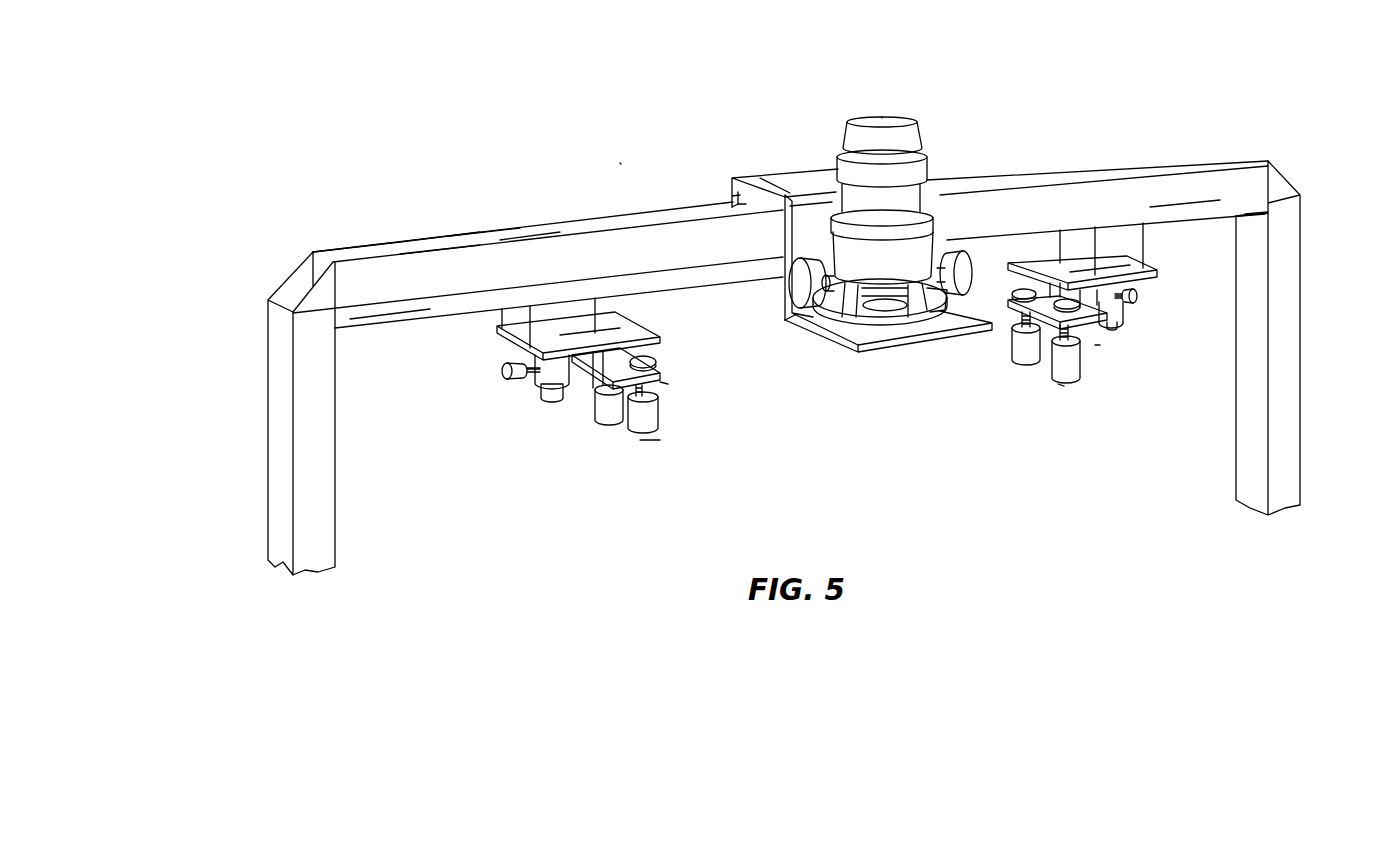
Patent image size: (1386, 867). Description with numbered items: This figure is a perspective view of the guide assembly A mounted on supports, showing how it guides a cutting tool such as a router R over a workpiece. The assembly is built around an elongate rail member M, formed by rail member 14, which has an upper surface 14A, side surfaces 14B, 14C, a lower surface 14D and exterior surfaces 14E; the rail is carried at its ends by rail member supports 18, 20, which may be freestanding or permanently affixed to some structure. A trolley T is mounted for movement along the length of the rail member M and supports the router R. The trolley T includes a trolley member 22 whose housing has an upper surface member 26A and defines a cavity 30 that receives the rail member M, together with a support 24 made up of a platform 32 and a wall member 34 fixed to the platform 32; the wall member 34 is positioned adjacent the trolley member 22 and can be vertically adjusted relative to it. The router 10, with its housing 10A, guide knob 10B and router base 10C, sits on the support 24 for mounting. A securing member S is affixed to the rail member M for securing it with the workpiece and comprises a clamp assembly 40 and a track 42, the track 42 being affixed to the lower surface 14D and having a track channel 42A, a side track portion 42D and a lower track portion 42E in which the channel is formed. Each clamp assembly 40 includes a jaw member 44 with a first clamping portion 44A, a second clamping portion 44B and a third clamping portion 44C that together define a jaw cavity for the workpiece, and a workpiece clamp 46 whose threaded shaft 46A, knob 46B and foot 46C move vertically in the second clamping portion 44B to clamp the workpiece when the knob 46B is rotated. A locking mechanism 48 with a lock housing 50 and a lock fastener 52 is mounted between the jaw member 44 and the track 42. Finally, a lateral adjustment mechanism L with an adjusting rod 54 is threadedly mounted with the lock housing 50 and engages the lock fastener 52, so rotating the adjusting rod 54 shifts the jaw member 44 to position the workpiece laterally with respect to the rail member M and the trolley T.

The rail member M is at (349, 246).
The rail member 14 is at (396, 247).
The upper surface 14A is at (426, 252).
The side surface 14B is at (447, 262).
The side surface 14C is at (484, 240).
The lower surface 14D is at (388, 308).
The exterior surfaces 14E is at (530, 232).
The rail member support 18 is at (280, 487).
The rail member support 20 is at (1302, 408).
The guide assembly A is at (620, 163).
The trolley T is at (727, 180).
The trolley member 22 is at (760, 180).
The upper surface member 26A is at (787, 183).
The cavity 30 is at (733, 198).
The wall member 34 is at (800, 232).
The platform 32 is at (832, 350).
The support 24 is at (883, 355).
The router 10 is at (859, 248).
The housing 10A is at (912, 137).
The guide knob 10B is at (800, 283).
The router base 10C is at (933, 325).
The router R is at (903, 118).
The track 42 is at (1218, 206).
The track channel 42A is at (1183, 205).
The side track portion 42D is at (1248, 212).
The lower track portion 42E is at (1232, 225).
The jaw member 44 is at (665, 336).
The first clamping portion 44A is at (627, 326).
The second clamping portion 44B is at (657, 377).
The third clamping portion 44C is at (592, 383).
The workpiece clamp 46 is at (638, 428).
The threaded shaft 46A is at (647, 391).
The knob 46B is at (650, 413).
The foot 46C is at (657, 360).
The locking mechanism 48 is at (540, 383).
The lock housing 50 is at (568, 385).
The lock fastener 52 is at (545, 400).
The adjusting rod 54 is at (502, 362).
The lateral adjustment mechanism L is at (495, 375).
The securing member S is at (665, 385).
The clamp assembly 40 is at (660, 440).